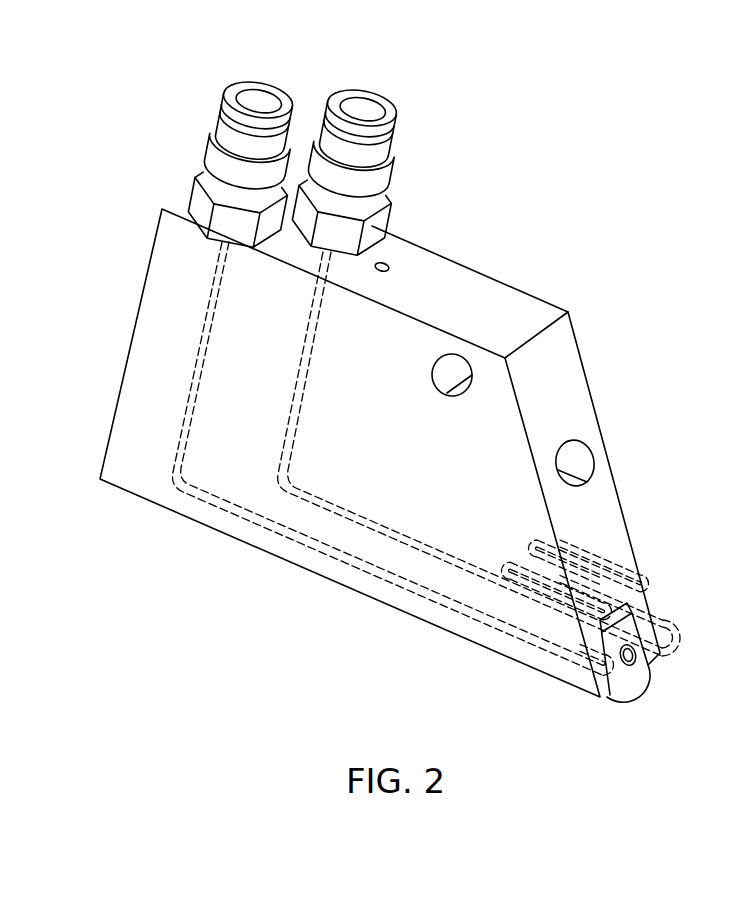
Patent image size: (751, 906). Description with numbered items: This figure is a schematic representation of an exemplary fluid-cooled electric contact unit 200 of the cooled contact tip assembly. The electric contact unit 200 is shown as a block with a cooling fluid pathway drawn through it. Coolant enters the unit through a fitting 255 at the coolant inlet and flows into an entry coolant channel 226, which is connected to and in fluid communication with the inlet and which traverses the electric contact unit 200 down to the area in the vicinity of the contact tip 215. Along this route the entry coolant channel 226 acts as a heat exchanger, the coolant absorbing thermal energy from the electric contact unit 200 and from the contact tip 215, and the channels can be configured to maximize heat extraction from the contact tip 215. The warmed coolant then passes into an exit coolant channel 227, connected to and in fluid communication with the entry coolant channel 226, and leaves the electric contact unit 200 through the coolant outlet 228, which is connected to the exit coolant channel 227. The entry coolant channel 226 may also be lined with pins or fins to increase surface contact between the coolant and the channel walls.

The electric contact unit 200 is at (447, 280).
The contact tip 215 is at (633, 677).
The entry coolant channel 226 is at (223, 508).
The exit coolant channel 227 is at (337, 514).
The coolant outlet 228 is at (365, 110).
The inlet fitting 255 is at (262, 102).